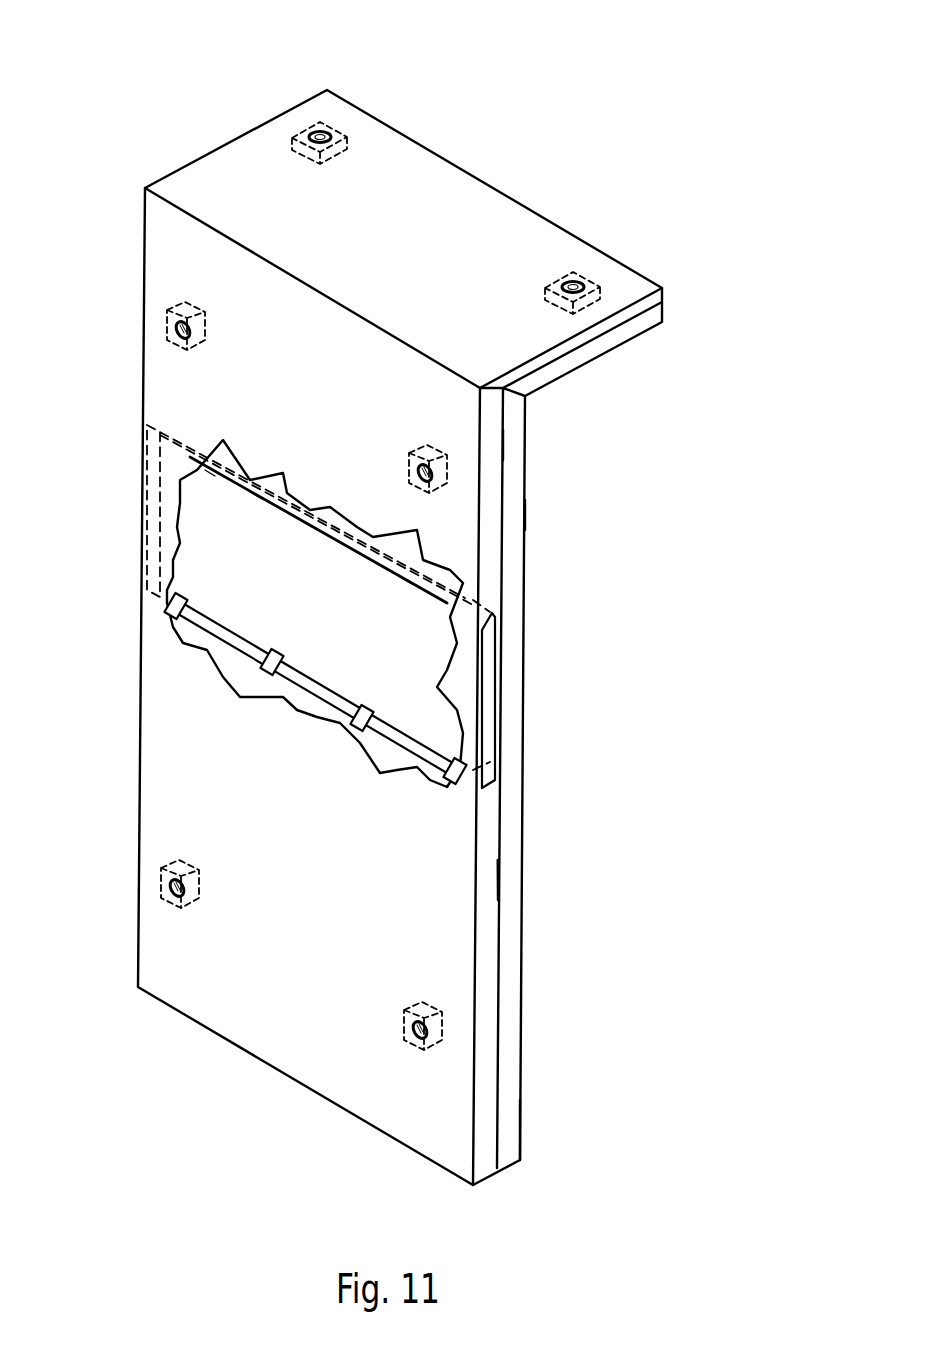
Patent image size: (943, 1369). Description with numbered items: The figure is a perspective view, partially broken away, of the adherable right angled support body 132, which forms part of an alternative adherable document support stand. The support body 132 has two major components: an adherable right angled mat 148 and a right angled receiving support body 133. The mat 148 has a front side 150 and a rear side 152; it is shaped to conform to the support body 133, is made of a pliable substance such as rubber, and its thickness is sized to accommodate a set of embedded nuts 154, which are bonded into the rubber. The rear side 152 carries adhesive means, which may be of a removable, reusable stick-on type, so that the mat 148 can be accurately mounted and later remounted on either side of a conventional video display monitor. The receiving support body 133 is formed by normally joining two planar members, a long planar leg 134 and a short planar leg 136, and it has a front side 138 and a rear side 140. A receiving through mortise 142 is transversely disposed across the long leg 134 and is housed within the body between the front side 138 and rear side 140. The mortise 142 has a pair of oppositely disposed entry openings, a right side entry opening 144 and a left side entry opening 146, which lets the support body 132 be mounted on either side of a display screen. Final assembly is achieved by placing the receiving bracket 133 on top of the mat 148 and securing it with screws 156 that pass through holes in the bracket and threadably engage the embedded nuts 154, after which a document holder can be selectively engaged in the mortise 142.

The adherable right angled support body 132 is at (537, 88).
The right angled receiving support body 133 is at (494, 872).
The long planar leg 134 is at (240, 983).
The short planar leg 136 is at (425, 223).
The front side 138 is at (435, 973).
The rear side 140 is at (503, 1093).
The receiving through mortise 142 is at (512, 672).
The right side entry opening 144 is at (148, 515).
The left side entry opening 146 is at (492, 745).
The adherable right angled mat 148 is at (516, 585).
The front side 150 is at (497, 447).
The rear side 152 is at (525, 510).
The embedded nuts 154 is at (597, 283).
The screws 156 is at (320, 133).